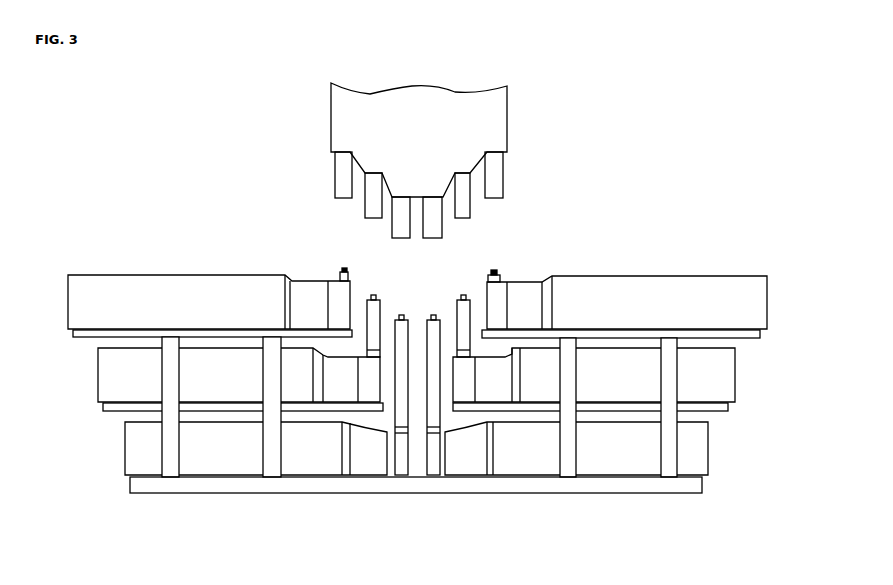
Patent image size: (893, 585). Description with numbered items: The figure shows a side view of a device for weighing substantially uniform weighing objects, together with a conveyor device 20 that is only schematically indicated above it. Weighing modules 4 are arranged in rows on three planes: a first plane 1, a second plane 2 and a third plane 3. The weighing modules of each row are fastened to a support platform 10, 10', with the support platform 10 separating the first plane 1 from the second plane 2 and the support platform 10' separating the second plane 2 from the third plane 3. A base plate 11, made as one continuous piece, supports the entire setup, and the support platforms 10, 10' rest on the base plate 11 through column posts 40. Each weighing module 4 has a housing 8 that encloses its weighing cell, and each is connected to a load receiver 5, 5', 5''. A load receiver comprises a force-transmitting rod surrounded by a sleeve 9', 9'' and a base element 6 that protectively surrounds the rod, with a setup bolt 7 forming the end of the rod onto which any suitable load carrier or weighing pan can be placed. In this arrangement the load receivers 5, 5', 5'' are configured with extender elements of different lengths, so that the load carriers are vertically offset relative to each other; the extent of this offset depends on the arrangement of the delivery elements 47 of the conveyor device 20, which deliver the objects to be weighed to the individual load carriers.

The first plane 1 is at (448, 247).
The second plane 2 is at (784, 378).
The third plane 3 is at (784, 452).
The weighing module 4 is at (627, 247).
The load receiver 5 is at (483, 255).
The load receiver 5' is at (451, 304).
The load receiver 5'' is at (424, 369).
The base element 6 is at (338, 272).
The setup bolt 7 is at (498, 276).
The housing 8 is at (209, 302).
The sleeve 9' is at (310, 260).
The pin 9'' is at (345, 319).
The support platform 10 is at (391, 366).
The support platform 10' is at (373, 437).
The base plate 11 is at (162, 485).
The conveyor device 20 is at (473, 138).
The column post 40 is at (172, 455).
The delivery element 47 is at (433, 215).